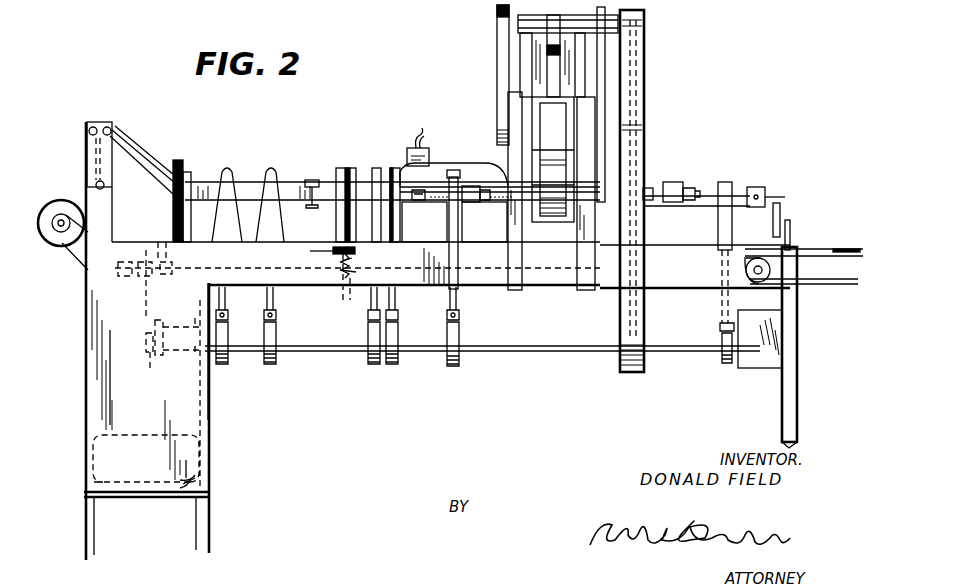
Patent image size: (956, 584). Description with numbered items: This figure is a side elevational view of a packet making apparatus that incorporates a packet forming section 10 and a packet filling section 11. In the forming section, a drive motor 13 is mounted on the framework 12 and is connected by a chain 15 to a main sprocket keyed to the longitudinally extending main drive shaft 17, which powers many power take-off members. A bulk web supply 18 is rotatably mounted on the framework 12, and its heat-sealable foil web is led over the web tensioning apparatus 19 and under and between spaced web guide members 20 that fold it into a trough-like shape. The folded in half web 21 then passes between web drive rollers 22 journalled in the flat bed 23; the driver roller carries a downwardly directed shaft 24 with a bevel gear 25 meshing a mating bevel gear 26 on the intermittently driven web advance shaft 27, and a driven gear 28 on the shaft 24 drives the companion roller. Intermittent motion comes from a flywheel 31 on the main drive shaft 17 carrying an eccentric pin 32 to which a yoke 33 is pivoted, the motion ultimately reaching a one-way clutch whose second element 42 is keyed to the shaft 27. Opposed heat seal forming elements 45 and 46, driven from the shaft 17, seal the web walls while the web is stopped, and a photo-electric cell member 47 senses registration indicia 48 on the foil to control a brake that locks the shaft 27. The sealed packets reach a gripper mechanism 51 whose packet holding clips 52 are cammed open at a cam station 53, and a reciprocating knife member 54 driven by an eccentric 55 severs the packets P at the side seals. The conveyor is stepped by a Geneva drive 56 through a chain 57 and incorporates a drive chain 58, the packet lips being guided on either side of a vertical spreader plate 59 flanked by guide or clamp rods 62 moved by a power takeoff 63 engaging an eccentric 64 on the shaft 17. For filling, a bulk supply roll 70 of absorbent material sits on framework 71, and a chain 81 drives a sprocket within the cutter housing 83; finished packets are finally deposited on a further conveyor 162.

The packet forming section 10 is at (132, 86).
The packet filling section 11 is at (669, 132).
The framework 12 is at (208, 442).
The drive motor 13 is at (205, 484).
The chain 15 is at (208, 417).
The main drive shaft 17 is at (304, 353).
The bulk web supply 18 is at (61, 201).
The web tensioning apparatus 19 is at (110, 164).
The web guide members 20 is at (177, 166).
The folded in half web 21 is at (189, 178).
The web drive roller 22 is at (345, 168).
The flat bed 23 is at (428, 250).
The shaft 24 is at (428, 229).
The bevel gear 25 is at (350, 306).
The bevel gear 26 is at (348, 285).
The web advance shaft 27 is at (299, 292).
The driven gear 28 is at (319, 251).
The flywheel 31 is at (143, 380).
The eccentric pin 32 is at (150, 345).
The yoke 33 is at (164, 318).
The second element of one-way clutch 42 is at (357, 281).
The heat seal forming elements 45 is at (221, 176).
The heat seal forming elements 46 is at (272, 175).
The photo-electric cell member 47 is at (320, 178).
The registration indicia 48 is at (321, 181).
The gripper mechanism 51 is at (699, 183).
The packet holding clips 52 is at (498, 208).
The cam station 53 is at (395, 168).
The reciprocating knife member 54 is at (376, 168).
The eccentric 55 is at (376, 367).
The Geneva drive 56 is at (750, 368).
The chain 57 is at (745, 187).
The drive chain 58 is at (660, 188).
The spreader plate 59 is at (455, 162).
The guide or clamp rods 62 is at (500, 178).
The power takeoff 63 is at (458, 303).
The eccentric 64 is at (452, 366).
The bulk supply roll 70 is at (550, 222).
The framework 71 is at (585, 278).
The chain 81 is at (640, 298).
The cutter housing 83 is at (496, 60).
The further conveyor 162 is at (822, 285).
The packets P is at (672, 200).